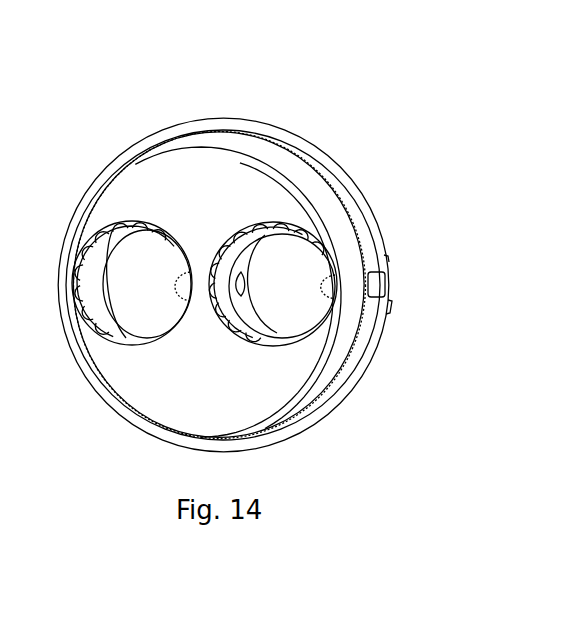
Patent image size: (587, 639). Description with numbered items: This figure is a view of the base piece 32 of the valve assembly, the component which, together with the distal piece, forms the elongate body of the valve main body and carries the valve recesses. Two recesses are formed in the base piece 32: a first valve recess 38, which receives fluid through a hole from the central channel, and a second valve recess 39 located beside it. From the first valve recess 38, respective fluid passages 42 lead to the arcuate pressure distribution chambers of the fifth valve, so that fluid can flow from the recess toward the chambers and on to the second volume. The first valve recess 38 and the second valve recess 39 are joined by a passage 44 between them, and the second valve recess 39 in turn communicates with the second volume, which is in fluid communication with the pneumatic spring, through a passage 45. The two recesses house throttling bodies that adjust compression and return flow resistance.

The base piece 32 is at (345, 110).
The first valve recess 38 is at (111, 283).
The second valve recess 39 is at (275, 336).
The fluid passages 42 is at (128, 303).
The passage 44 is at (246, 281).
The passage 45 is at (382, 278).